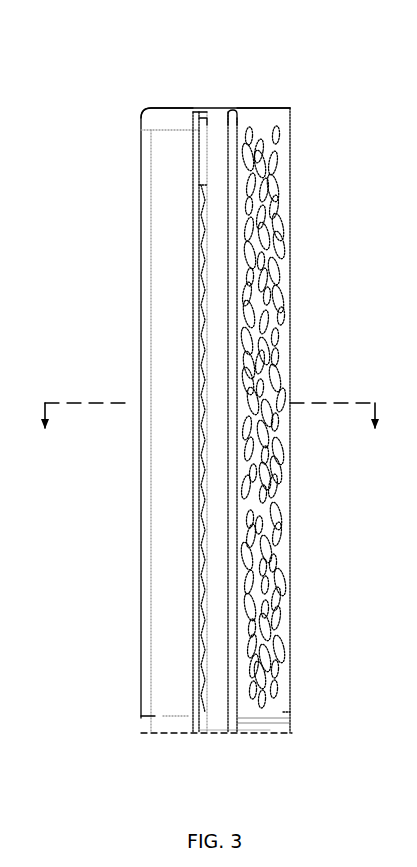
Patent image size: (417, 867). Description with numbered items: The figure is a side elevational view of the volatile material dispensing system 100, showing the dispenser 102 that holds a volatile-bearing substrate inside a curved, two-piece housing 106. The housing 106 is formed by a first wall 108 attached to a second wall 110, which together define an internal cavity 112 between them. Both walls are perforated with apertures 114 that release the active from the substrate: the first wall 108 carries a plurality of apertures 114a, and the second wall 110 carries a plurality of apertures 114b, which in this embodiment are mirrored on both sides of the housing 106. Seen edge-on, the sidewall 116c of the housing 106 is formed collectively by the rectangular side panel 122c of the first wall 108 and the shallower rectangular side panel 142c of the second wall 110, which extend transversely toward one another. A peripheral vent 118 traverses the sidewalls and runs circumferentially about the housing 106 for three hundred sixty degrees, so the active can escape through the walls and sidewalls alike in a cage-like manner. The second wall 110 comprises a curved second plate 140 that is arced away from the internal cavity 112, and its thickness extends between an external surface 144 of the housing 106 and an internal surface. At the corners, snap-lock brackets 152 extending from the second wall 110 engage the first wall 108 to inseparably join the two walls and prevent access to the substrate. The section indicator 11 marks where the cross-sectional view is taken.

The volatile material dispensing system 100 is at (46, 136).
The dispenser 102 is at (53, 203).
The housing 106 is at (306, 108).
The first wall 108 is at (178, 109).
The second wall 110 is at (246, 112).
The internal cavity 112 is at (196, 292).
The aperture 114 is at (270, 273).
The aperture 114a is at (200, 463).
The aperture 114b is at (277, 508).
The sidewall 116c is at (172, 594).
The peripheral vent 118 is at (200, 212).
The side panel 122c is at (163, 343).
The second plate 140 is at (283, 712).
The side panel 142c is at (212, 356).
The external surface 144 is at (258, 713).
The snap-lock bracket 152 is at (203, 143).
The section line 11- 11 is at (212, 436).